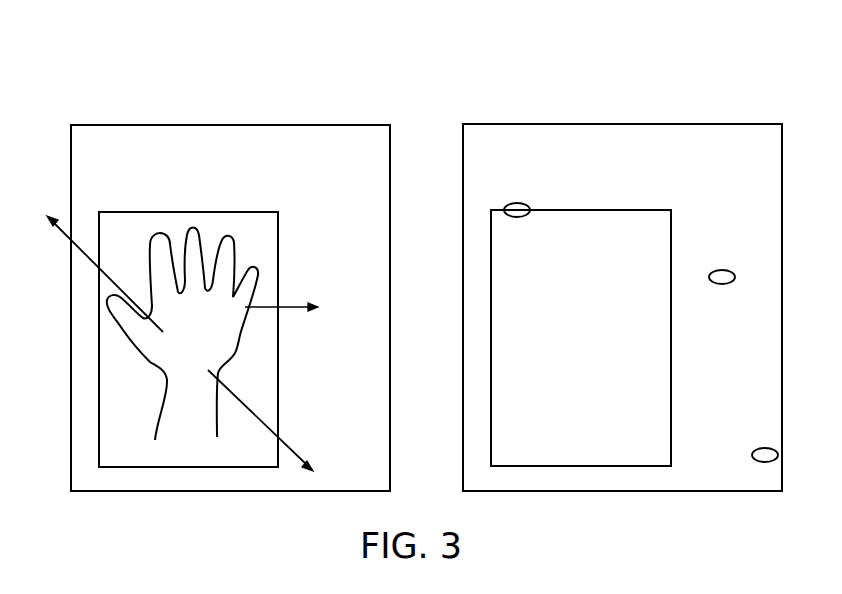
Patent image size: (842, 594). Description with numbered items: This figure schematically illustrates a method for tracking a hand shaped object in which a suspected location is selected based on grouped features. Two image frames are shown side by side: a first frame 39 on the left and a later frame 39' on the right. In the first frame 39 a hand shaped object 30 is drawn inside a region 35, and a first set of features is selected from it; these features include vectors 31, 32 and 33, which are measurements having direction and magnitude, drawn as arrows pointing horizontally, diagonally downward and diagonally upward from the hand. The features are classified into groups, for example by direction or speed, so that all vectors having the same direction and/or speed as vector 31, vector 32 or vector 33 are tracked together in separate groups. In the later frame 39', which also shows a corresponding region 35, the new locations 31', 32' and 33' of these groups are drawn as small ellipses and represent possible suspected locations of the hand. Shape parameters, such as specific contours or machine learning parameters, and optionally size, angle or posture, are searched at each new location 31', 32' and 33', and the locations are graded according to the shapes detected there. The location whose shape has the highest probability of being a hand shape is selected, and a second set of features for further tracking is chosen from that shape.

The hand 30 is at (190, 212).
The vector 31 is at (281, 282).
The vector 32 is at (279, 420).
The vector 33 is at (94, 274).
The detection region 35 is at (248, 211).
The frame 39 is at (230, 285).
The frame 39' is at (622, 285).
The new location 31' is at (723, 253).
The new location 32' is at (760, 433).
The new location 33' is at (518, 186).